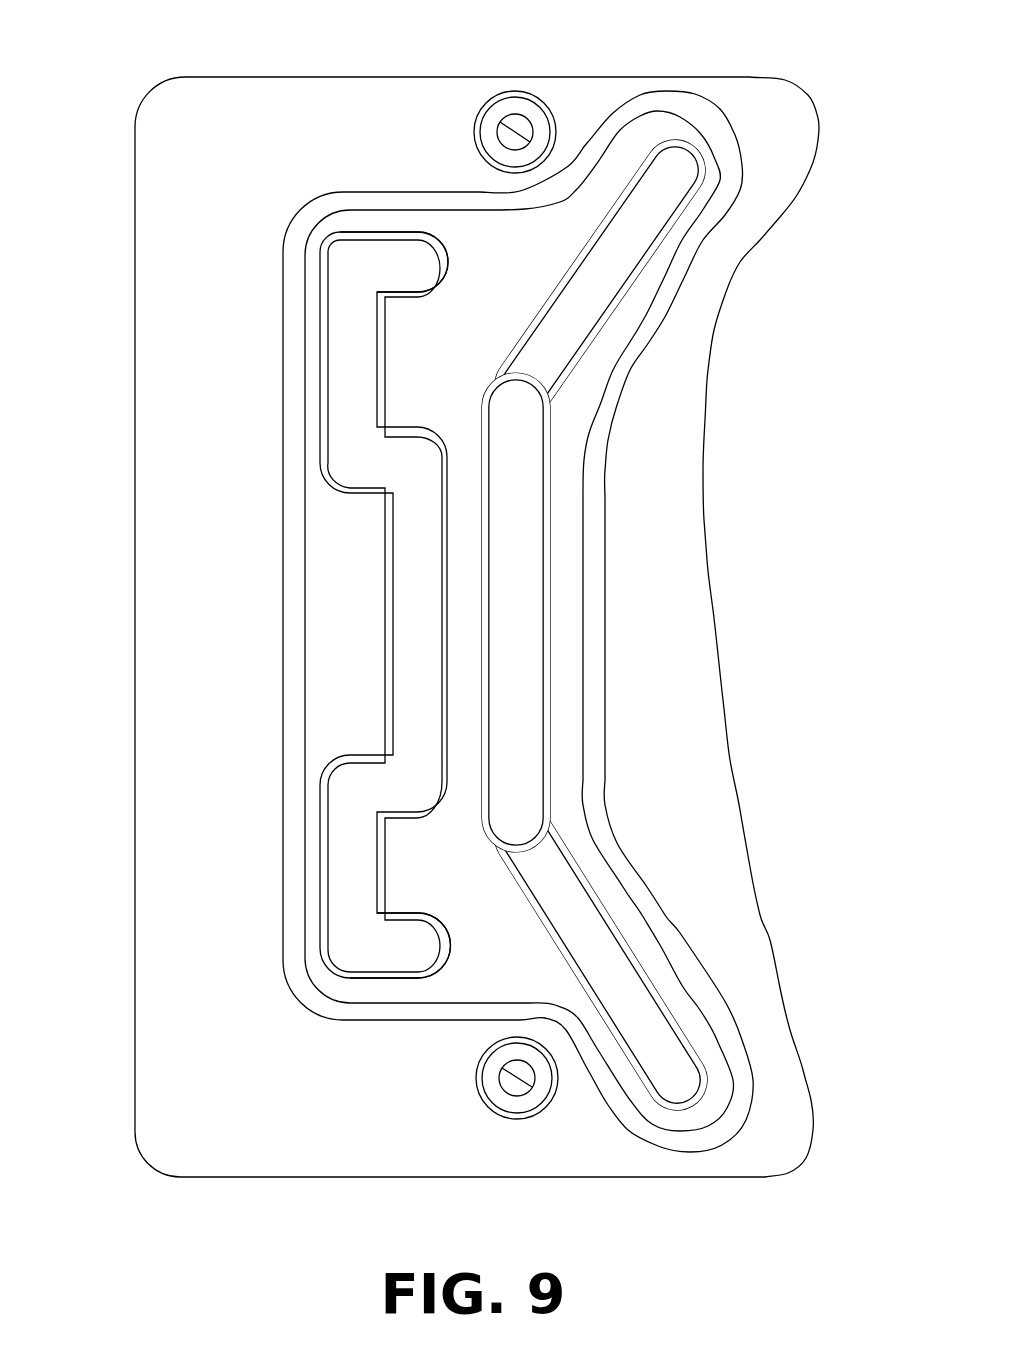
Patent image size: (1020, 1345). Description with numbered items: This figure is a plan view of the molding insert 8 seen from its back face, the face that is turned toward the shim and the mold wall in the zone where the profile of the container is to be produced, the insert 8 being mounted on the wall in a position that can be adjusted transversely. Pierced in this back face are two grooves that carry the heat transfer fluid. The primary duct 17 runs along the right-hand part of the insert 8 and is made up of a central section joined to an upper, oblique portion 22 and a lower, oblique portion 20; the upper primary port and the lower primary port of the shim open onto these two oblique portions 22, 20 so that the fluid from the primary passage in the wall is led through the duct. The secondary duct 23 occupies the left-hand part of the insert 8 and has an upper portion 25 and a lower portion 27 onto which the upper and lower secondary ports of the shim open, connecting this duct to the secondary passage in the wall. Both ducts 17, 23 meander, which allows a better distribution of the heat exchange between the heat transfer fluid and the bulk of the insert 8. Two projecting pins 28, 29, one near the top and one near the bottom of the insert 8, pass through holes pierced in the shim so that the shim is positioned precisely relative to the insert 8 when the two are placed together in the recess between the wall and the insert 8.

The molding insert 8 is at (290, 77).
The primary duct 17 is at (508, 623).
The lower oblique portion of the primary duct 20 is at (622, 993).
The upper oblique portion of the primary duct 22 is at (603, 265).
The secondary duct 23 is at (412, 640).
The upper portion of the secondary duct 25 is at (393, 272).
The lower portion of the secondary duct 27 is at (422, 940).
The projecting pin 28 is at (499, 94).
The projecting pin 29 is at (507, 1120).